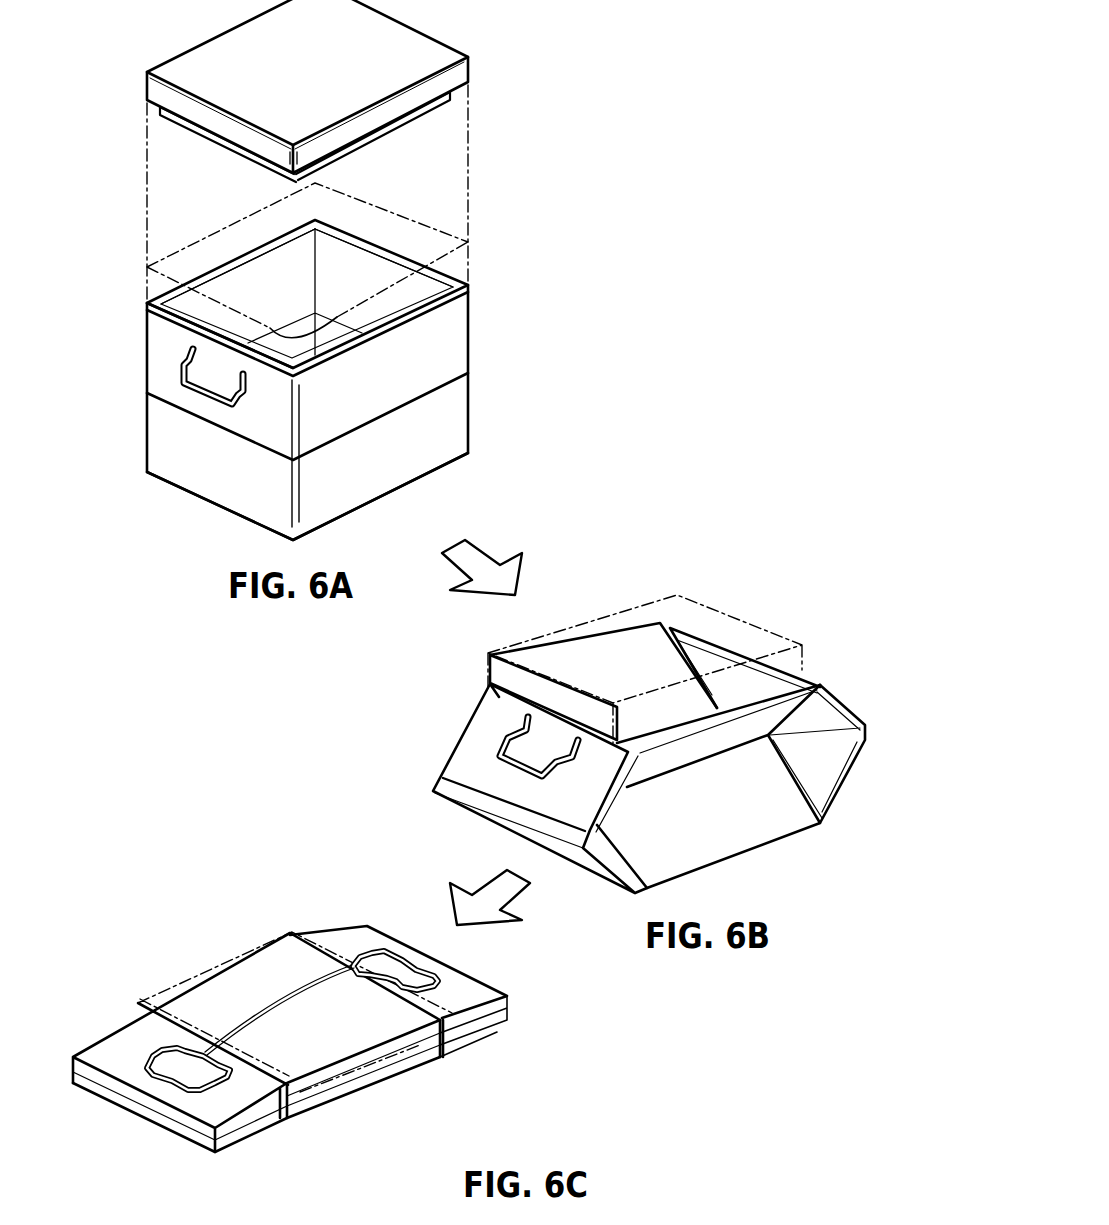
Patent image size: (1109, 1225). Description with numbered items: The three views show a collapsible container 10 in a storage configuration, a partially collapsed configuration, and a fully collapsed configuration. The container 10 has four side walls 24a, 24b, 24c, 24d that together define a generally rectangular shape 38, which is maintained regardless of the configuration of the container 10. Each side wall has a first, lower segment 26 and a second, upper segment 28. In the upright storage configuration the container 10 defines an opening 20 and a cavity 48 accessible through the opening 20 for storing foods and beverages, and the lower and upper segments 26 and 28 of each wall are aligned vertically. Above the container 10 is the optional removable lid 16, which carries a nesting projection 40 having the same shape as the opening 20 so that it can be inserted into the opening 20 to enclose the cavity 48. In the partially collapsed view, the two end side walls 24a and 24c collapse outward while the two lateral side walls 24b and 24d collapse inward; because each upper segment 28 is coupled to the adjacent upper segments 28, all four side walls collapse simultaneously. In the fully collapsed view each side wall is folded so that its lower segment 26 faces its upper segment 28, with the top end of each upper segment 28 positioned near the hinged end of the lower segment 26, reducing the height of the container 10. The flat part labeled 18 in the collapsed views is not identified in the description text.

In FIG. 6A, the container 10 is at (470, 407).
In FIG. 6A, the removable lid 16 is at (412, 45).
In FIG. 6B, the base panel 18 is at (630, 632).
In FIG. 6C, the base panel 18 is at (512, 1015).
In FIG. 6A, the opening 20 is at (375, 285).
In FIG. 6A, the end side wall 24a is at (212, 468).
In FIG. 6B, the end side wall 24a is at (475, 767).
In FIG. 6C, the end side wall 24a is at (462, 990).
In FIG. 6A, the lateral side wall 24b is at (250, 272).
In FIG. 6B, the lateral side wall 24b is at (600, 678).
In FIG. 6A, the end side wall 24c is at (420, 288).
In FIG. 6B, the end side wall 24c is at (833, 693).
In FIG. 6C, the end side wall 24c is at (248, 990).
In FIG. 6B, the lateral side wall 24d is at (707, 827).
In FIG. 6C, the lateral side wall 24d is at (393, 1069).
In FIG. 6A, the lower segment 26 is at (178, 438).
In FIG. 6B, the lower segment 26 is at (487, 822).
In FIG. 6C, the lower segment 26 is at (358, 1090).
In FIG. 6A, the upper segment 28 is at (160, 355).
In FIG. 6B, the upper segment 28 is at (490, 730).
In FIG. 6C, the upper segment 28 is at (312, 1085).
In FIG. 6A, the generally rectangular shape 38 is at (448, 240).
In FIG. 6B, the generally rectangular shape 38 is at (737, 615).
In FIG. 6C, the generally rectangular shape 38 is at (270, 937).
In FIG. 6A, the nesting projection 40 is at (418, 128).
In FIG. 6A, the cavity 48 is at (199, 304).